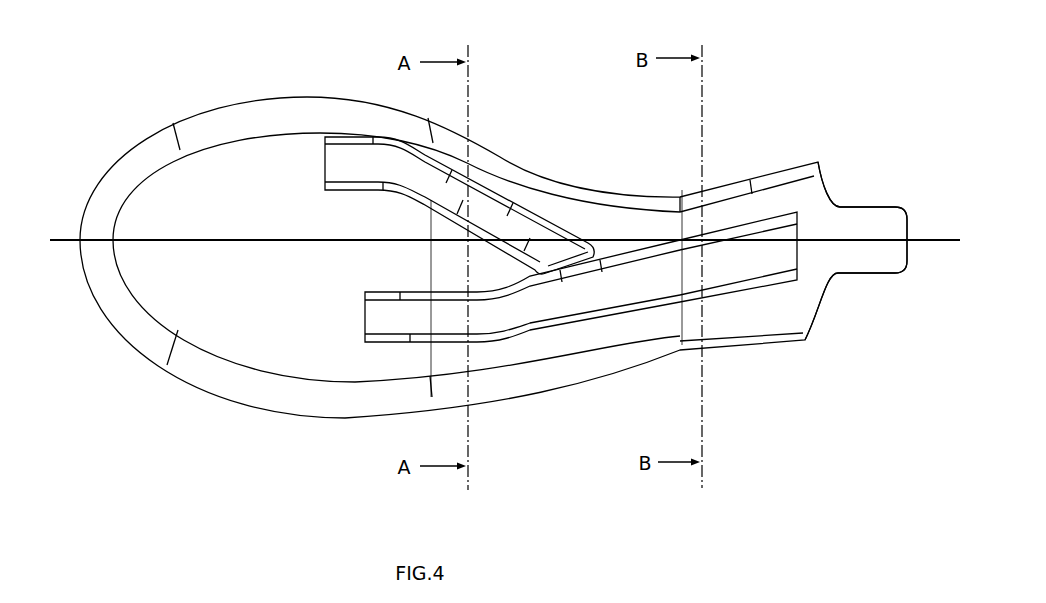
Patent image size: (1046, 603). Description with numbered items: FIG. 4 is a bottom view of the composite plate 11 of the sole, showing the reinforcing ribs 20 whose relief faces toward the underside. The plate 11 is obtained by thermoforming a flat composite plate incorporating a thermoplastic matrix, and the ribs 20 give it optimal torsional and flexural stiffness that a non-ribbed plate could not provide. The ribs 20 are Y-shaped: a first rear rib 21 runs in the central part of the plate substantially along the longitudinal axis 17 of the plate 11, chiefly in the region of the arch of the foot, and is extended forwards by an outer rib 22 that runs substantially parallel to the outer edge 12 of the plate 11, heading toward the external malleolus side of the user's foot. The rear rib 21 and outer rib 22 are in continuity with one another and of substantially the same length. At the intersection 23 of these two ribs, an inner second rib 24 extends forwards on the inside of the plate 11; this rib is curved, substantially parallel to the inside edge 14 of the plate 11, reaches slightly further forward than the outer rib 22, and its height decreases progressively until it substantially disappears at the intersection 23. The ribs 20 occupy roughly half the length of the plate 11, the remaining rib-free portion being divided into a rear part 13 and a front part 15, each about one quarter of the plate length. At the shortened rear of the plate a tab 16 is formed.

The plate 11 is at (110, 332).
The outer edge 12 is at (247, 402).
The rear part 13 is at (823, 257).
The inside edge 14 is at (237, 103).
The front part 15 is at (243, 273).
The tab 16 is at (863, 258).
The longitudinal axis 17 is at (78, 240).
The reinforcing ribs 20 is at (556, 217).
The first rear rib 21 is at (748, 258).
The outer rib 22 is at (432, 313).
The intersection 23 is at (575, 282).
The inner second rib 24 is at (407, 150).